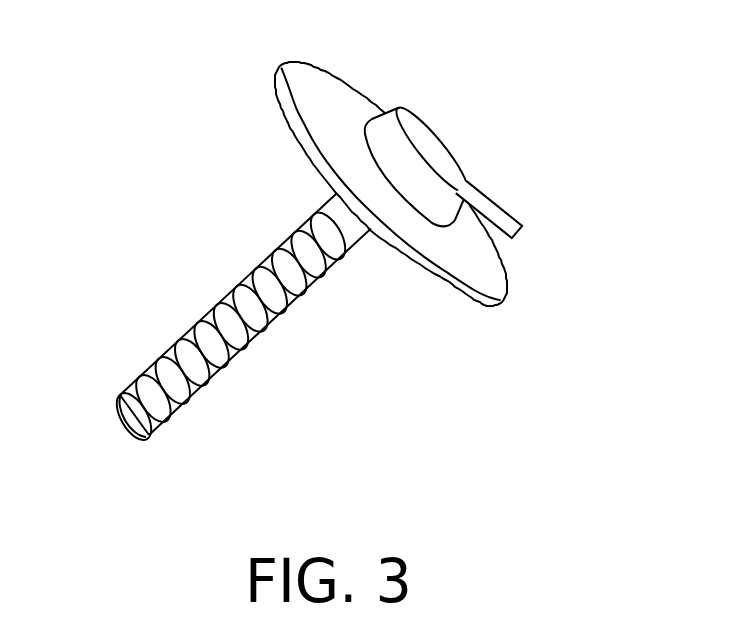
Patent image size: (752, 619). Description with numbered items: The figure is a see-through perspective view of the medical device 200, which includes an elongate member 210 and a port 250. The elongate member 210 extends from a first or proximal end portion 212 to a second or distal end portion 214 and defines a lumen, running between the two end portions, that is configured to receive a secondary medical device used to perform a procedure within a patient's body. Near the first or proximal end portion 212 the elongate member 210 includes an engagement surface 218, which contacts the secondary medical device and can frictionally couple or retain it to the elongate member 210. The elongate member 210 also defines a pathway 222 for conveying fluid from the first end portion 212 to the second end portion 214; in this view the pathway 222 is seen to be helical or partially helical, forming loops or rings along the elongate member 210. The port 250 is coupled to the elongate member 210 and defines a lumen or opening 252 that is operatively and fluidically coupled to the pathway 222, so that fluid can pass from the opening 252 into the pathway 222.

The medical device 200 is at (130, 219).
The elongate member 210 is at (278, 325).
The first or proximal end portion 212 is at (370, 237).
The second or distal end portion 214 is at (130, 440).
The engagement surface 218 is at (333, 193).
The pathway 222 is at (217, 377).
The port 250 is at (478, 182).
The lumen or opening 252 is at (518, 237).